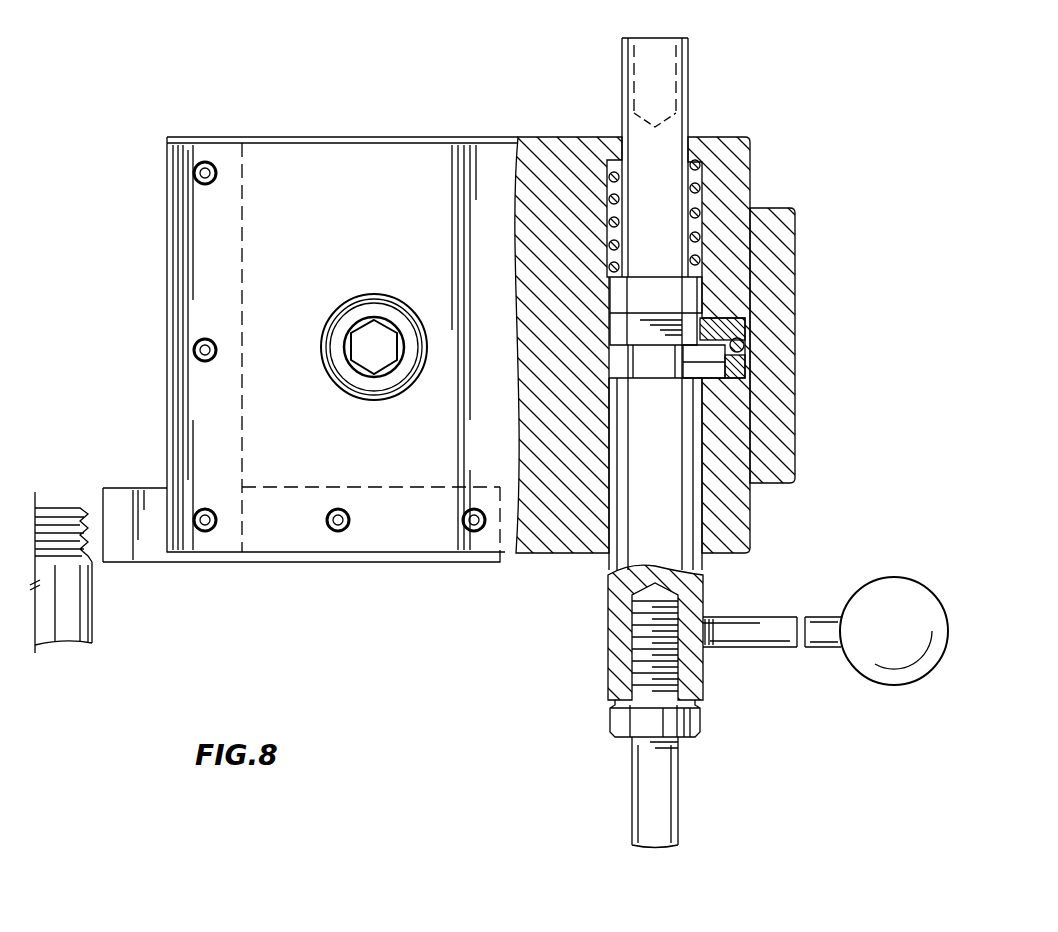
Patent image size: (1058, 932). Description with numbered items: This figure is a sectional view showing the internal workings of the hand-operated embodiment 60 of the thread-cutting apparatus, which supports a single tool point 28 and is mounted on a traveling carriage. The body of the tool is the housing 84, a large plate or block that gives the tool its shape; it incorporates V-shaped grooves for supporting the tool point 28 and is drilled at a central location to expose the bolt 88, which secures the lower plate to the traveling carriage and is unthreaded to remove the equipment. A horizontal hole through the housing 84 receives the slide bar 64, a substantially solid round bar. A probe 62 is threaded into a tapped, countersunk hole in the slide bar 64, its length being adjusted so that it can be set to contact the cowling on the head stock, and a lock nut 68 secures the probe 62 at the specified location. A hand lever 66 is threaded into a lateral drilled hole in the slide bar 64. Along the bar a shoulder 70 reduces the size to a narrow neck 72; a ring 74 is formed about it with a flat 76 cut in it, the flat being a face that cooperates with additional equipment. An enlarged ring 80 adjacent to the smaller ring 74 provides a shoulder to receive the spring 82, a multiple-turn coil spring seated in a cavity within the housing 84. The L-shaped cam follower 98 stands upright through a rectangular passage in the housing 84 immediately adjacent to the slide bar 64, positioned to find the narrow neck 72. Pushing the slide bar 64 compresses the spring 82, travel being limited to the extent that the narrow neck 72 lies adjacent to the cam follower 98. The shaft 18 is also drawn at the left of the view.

The shaft 18 is at (85, 617).
The tool point 28 is at (115, 503).
The embodiment 60 is at (436, 632).
The probe 62 is at (670, 807).
The slide bar 64 is at (705, 590).
The hand lever 66 is at (775, 650).
The lock nut 68 is at (608, 722).
The shoulder 70 is at (612, 375).
The narrow neck 72 is at (685, 360).
The ring 74 is at (610, 322).
The flat 76 is at (673, 323).
The enlarged ring 80 is at (653, 283).
The spring 82 is at (700, 175).
The housing 84 is at (560, 150).
The bolt 88 is at (358, 325).
The cam follower 98 is at (745, 328).